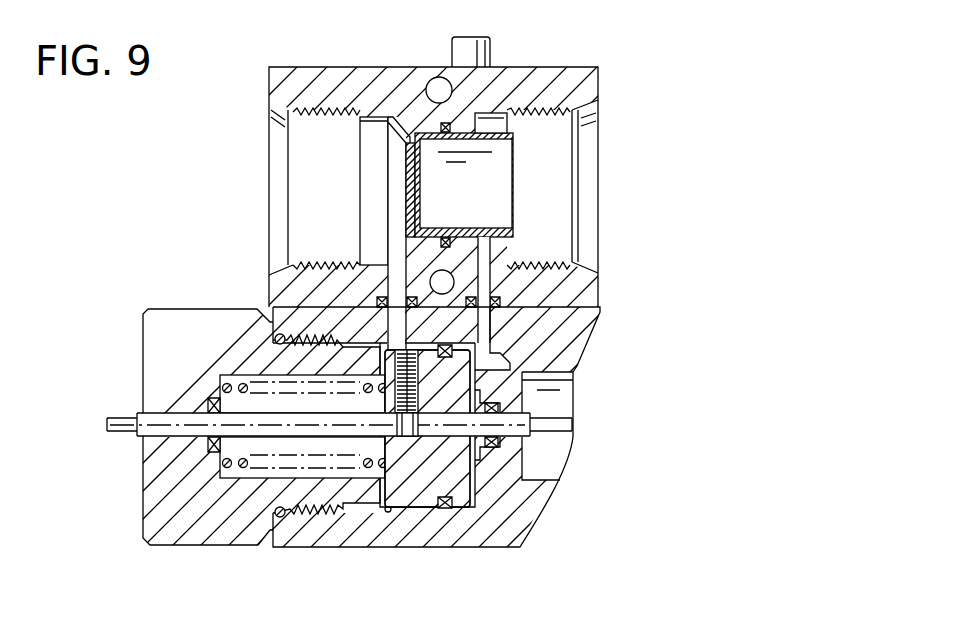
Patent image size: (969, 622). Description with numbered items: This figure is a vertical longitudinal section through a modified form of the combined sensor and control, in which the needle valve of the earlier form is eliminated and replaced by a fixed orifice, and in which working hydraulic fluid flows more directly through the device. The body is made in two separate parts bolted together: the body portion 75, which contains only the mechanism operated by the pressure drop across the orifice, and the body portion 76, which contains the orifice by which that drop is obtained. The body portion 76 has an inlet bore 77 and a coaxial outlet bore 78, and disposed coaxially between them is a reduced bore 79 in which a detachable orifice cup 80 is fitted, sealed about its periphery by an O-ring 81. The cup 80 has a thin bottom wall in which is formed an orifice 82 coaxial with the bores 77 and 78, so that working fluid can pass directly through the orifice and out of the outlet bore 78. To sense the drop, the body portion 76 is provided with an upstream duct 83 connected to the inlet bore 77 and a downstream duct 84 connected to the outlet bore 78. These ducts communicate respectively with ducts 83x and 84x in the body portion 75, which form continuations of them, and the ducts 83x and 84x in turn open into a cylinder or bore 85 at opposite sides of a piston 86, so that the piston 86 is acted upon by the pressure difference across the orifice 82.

The body portion 75 is at (431, 530).
The body portion 76 is at (338, 67).
The inlet bore 77 is at (562, 218).
The outlet bore 78 is at (298, 186).
The reduced bore 79 is at (459, 128).
The orifice cup 80 is at (513, 183).
The O-ring 81 is at (442, 124).
The orifice 82 is at (413, 168).
The upstream duct 83 is at (481, 270).
The duct 83x is at (483, 323).
The downstream duct 84 is at (398, 260).
The duct 84x is at (399, 322).
The cylinder or bore 85 is at (387, 509).
The piston 86 is at (457, 490).